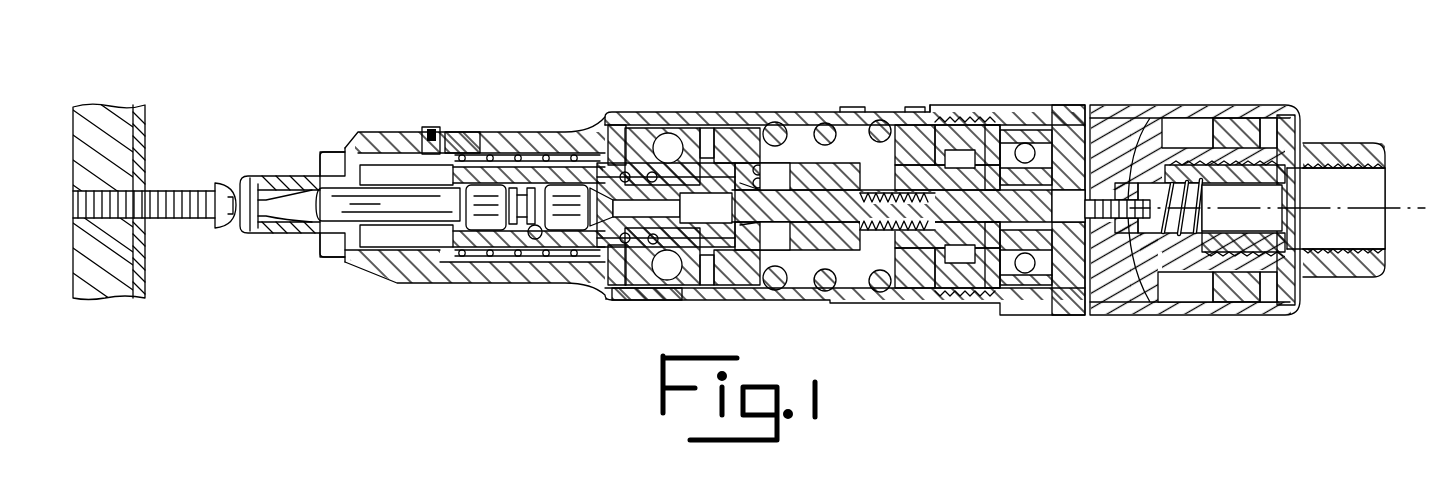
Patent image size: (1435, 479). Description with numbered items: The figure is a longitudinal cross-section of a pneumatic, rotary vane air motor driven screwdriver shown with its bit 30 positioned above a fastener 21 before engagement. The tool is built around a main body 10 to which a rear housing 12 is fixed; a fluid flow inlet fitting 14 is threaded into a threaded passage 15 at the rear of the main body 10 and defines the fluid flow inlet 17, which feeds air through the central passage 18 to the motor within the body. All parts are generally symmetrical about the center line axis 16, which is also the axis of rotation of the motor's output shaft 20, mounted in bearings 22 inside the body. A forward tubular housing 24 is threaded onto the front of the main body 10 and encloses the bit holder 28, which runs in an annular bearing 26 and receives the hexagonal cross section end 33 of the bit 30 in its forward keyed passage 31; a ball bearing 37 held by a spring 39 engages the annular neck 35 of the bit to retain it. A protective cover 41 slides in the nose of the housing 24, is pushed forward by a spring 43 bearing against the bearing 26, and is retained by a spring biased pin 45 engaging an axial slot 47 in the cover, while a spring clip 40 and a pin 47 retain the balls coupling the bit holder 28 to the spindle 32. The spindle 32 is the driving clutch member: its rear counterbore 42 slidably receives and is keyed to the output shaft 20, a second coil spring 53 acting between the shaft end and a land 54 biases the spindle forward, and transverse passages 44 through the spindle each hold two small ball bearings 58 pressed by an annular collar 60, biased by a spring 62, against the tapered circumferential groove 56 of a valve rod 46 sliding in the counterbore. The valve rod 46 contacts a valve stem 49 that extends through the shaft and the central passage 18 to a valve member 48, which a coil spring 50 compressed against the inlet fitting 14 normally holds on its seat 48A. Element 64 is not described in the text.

The main body 10 is at (1062, 112).
The rear housing 12 is at (1145, 105).
The fluid flow inlet fitting 14 is at (1323, 143).
The threaded passage 15 is at (1232, 270).
The center line axis 16 is at (1302, 200).
The fluid flow inlet 17 is at (1374, 190).
The central passage 18 is at (1161, 106).
The output shaft 20 is at (975, 290).
The fastener 21 is at (198, 220).
The bearings 22 is at (1030, 284).
The forward tubular housing 24 is at (795, 150).
The annular bearing 26 is at (597, 132).
The bit holder 28 is at (629, 112).
The bit 30 is at (384, 200).
The forward keyed passage 31 is at (506, 226).
The spindle 32 is at (862, 165).
The hexagonal cross section end 33 is at (481, 224).
The annular neck 35 is at (516, 232).
The ball bearing 37 is at (536, 240).
The spring 39 is at (530, 152).
The spring clip 40 is at (645, 300).
The bit support shield or cover 41 is at (272, 176).
The counterbore 42 is at (996, 136).
The spring 43 is at (482, 130).
The transverse passage 44 is at (826, 106).
The spring biased pin 45 is at (440, 127).
The valve rod 46 is at (855, 250).
The axial slot 47 is at (342, 152).
The valve member 48 is at (1208, 125).
The seat 48A is at (1098, 313).
The valve stem 49 is at (970, 222).
The coil spring 50 is at (1176, 252).
The second coil spring 53 is at (947, 135).
The land 54 is at (907, 125).
The tapered circumferential groove 56 is at (762, 222).
The small ball bearings 58 is at (757, 165).
The annular collar 60 is at (772, 140).
The spring 62 is at (812, 150).
The O-ring 64 is at (742, 148).